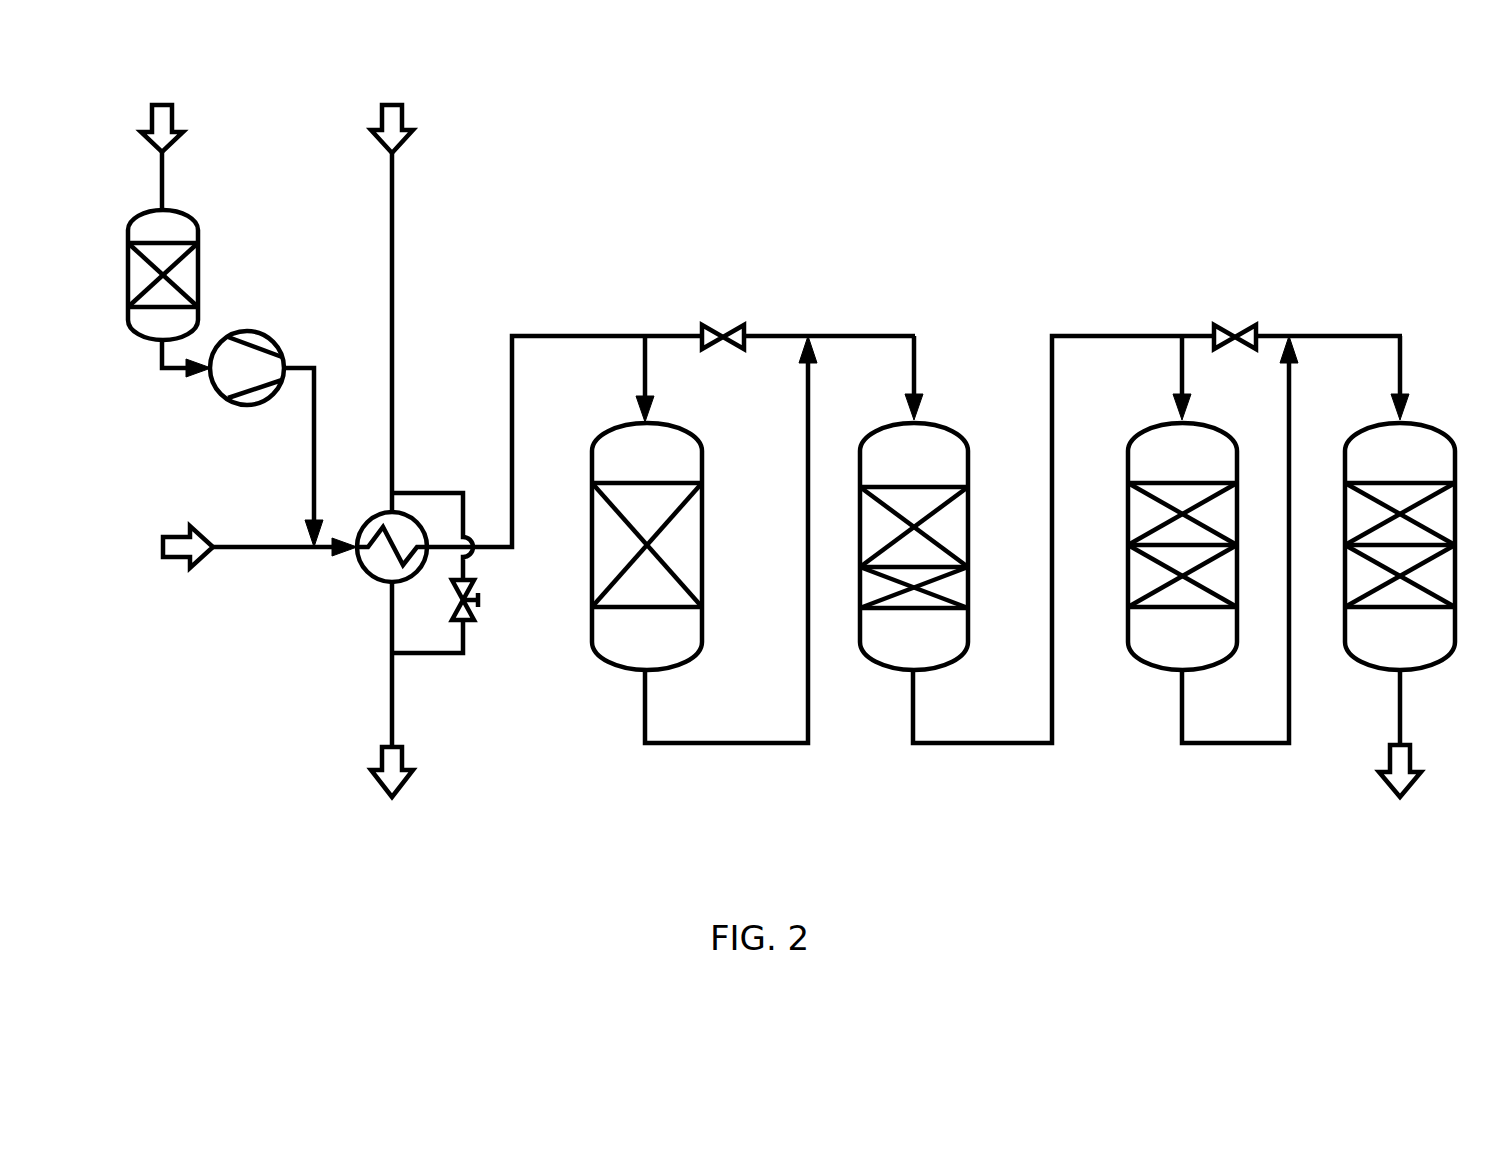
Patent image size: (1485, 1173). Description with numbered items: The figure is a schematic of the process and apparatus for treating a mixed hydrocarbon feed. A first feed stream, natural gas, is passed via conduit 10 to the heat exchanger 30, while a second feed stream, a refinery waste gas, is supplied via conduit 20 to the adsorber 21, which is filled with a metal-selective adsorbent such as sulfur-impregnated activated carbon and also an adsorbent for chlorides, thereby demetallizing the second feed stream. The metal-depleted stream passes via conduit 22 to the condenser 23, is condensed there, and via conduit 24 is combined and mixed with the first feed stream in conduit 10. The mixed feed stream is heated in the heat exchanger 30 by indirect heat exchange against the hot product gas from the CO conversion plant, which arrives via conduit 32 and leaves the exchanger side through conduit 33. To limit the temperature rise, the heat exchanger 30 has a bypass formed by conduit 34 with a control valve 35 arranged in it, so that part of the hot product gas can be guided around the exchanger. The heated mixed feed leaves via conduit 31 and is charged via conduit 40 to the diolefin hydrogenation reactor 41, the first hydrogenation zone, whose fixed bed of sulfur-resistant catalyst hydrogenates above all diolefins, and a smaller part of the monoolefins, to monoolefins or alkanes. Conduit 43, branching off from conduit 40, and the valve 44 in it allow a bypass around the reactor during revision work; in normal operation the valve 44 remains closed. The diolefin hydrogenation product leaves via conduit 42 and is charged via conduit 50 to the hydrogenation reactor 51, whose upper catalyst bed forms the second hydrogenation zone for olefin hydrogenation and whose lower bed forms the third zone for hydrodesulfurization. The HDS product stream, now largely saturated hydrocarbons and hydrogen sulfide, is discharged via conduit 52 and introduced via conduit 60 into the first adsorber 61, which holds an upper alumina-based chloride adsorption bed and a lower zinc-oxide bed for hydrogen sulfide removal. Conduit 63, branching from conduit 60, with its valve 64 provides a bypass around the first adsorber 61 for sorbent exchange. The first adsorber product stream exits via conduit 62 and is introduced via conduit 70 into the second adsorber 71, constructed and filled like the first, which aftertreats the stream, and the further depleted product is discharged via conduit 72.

The conduit 10 is at (250, 549).
The conduit 20 is at (163, 180).
The adsorber 21 is at (198, 278).
The conduit 22 is at (158, 357).
The condenser 23 is at (225, 400).
The conduit 24 is at (313, 487).
The heat exchanger 30 is at (375, 580).
The conduit 31 is at (565, 336).
The conduit 32 is at (393, 208).
The conduit 33 is at (393, 718).
The conduit 34 is at (422, 653).
The control valve 35 is at (483, 610).
The conduit 40 is at (645, 375).
The diolefin hydrogenation reactor 41 is at (647, 546).
The conduit 42 is at (723, 743).
The conduit 43 is at (773, 335).
The valve 44 is at (724, 352).
The conduit 50 is at (912, 338).
The hydrogenation reactor 51 is at (914, 546).
The conduit 52 is at (978, 743).
The conduit 60 is at (1182, 378).
The first adsorber 61 is at (1182, 546).
The conduit 62 is at (1231, 743).
The conduit 63 is at (1272, 333).
The valve 64 is at (1235, 350).
The conduit 70 is at (1397, 340).
The second adsorber 71 is at (1400, 546).
The conduit 72 is at (1402, 695).